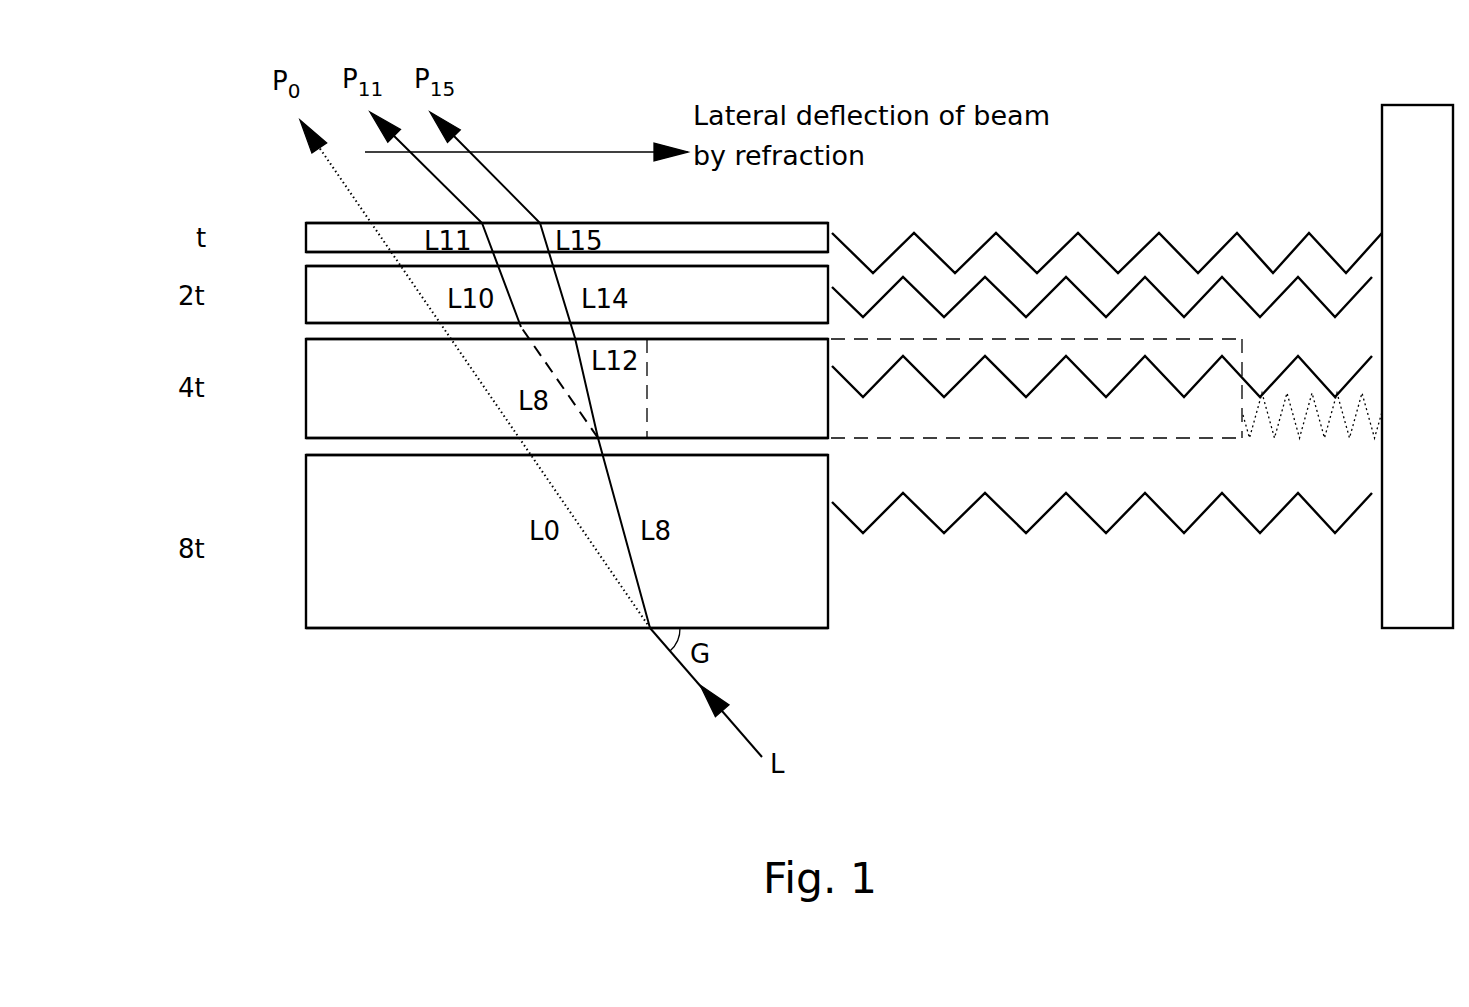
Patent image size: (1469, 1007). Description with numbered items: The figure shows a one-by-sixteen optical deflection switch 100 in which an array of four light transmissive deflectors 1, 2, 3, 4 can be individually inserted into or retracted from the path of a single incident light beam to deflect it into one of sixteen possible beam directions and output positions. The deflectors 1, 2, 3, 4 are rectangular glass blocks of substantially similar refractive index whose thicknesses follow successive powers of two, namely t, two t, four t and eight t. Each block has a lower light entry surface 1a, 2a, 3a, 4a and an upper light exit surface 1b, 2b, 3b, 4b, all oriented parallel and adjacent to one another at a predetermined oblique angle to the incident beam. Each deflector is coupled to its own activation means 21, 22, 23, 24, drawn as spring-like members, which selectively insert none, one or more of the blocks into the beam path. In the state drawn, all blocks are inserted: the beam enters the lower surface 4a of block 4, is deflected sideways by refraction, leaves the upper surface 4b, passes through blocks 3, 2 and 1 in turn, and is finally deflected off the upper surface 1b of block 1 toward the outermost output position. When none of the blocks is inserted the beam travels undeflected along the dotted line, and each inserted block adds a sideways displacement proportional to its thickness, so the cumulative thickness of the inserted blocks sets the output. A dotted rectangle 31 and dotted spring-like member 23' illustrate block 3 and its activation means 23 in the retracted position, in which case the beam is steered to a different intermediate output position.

The deflection switch 100 is at (220, 115).
The deflector block 1 is at (547, 213).
The light entry surface 1a is at (567, 207).
The light exit surface 1b is at (567, 194).
The deflector block 2 is at (536, 283).
The light entry surface 2a is at (567, 302).
The light exit surface 2b is at (567, 289).
The deflector block 3 is at (535, 388).
The light entry surface 3a is at (567, 412).
The light exit surface 3b is at (567, 357).
The deflector block 4 is at (535, 541).
The light entry surface 4a is at (567, 596).
The light exit surface 4b is at (567, 494).
The activation means 21 is at (1107, 156).
The activation means 22 is at (1102, 200).
The activation means 23 is at (1102, 244).
The retracted activation means 23' is at (1296, 548).
The activation means 24 is at (1102, 598).
The displaced position of third plate 31 is at (944, 521).